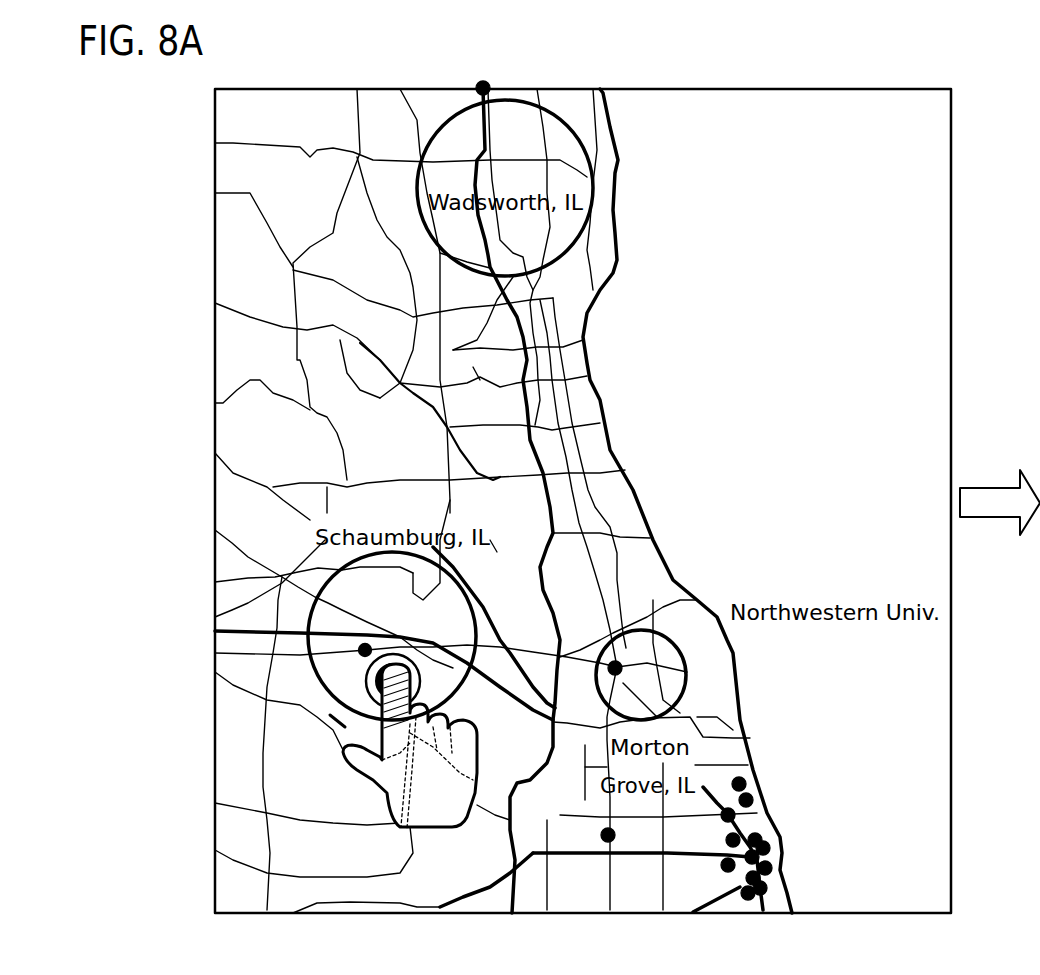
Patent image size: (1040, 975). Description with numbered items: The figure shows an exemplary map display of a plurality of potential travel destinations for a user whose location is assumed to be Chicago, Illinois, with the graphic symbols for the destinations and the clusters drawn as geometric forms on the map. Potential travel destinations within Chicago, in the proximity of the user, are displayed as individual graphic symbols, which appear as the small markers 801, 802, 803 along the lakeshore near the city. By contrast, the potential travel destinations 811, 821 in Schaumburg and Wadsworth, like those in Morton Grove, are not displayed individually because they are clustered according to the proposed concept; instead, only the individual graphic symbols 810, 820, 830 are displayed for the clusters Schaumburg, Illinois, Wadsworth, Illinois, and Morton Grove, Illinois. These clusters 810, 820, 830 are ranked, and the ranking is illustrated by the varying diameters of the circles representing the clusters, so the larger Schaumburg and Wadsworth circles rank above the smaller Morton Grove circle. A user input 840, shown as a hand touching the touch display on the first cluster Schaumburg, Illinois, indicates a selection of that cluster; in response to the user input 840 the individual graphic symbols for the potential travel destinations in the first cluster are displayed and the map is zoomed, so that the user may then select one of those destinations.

The point of interest marker 801 is at (803, 896).
The point of interest marker 802 is at (806, 870).
The cluster of point of interest markers 803 is at (685, 838).
The graphic symbol for cluster Schaumburg, Ill. 810 is at (361, 621).
The potential travel destination 811 is at (376, 617).
The graphic symbol for cluster Wadsworth, Ill. 820 is at (549, 188).
The potential travel destination 821 is at (601, 366).
The graphic symbol for cluster Morton Grove, Ill. 830 is at (699, 675).
The user input 840 is at (530, 501).